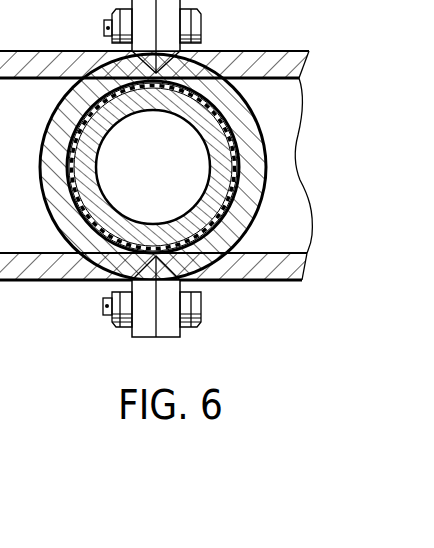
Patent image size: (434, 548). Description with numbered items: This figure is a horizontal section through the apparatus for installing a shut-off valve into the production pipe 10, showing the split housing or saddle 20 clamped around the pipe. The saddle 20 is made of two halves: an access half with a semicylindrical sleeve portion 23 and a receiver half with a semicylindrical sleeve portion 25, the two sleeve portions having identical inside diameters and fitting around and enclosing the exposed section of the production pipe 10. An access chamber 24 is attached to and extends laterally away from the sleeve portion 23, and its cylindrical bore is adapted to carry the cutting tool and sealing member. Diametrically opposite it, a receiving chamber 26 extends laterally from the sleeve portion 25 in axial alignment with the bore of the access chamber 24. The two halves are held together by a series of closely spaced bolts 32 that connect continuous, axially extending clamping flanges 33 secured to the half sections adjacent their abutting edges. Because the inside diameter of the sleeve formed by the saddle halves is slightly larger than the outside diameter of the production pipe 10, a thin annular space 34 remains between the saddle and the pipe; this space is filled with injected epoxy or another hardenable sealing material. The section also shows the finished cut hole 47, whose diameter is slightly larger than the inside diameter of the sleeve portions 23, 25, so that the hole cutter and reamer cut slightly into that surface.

The production pipe 10 is at (100, 145).
The split housing or saddle 20 is at (252, 50).
The semicylindrical sleeve portion 23 is at (257, 185).
The access chamber 24 is at (278, 281).
The semicylindrical sleeve portion 25 is at (67, 213).
The receiving chamber 26 is at (60, 51).
The bolts 32 is at (202, 317).
The clamping flanges 33 is at (148, 337).
The annular space 34 is at (127, 222).
The finished cut hole 47 is at (50, 116).